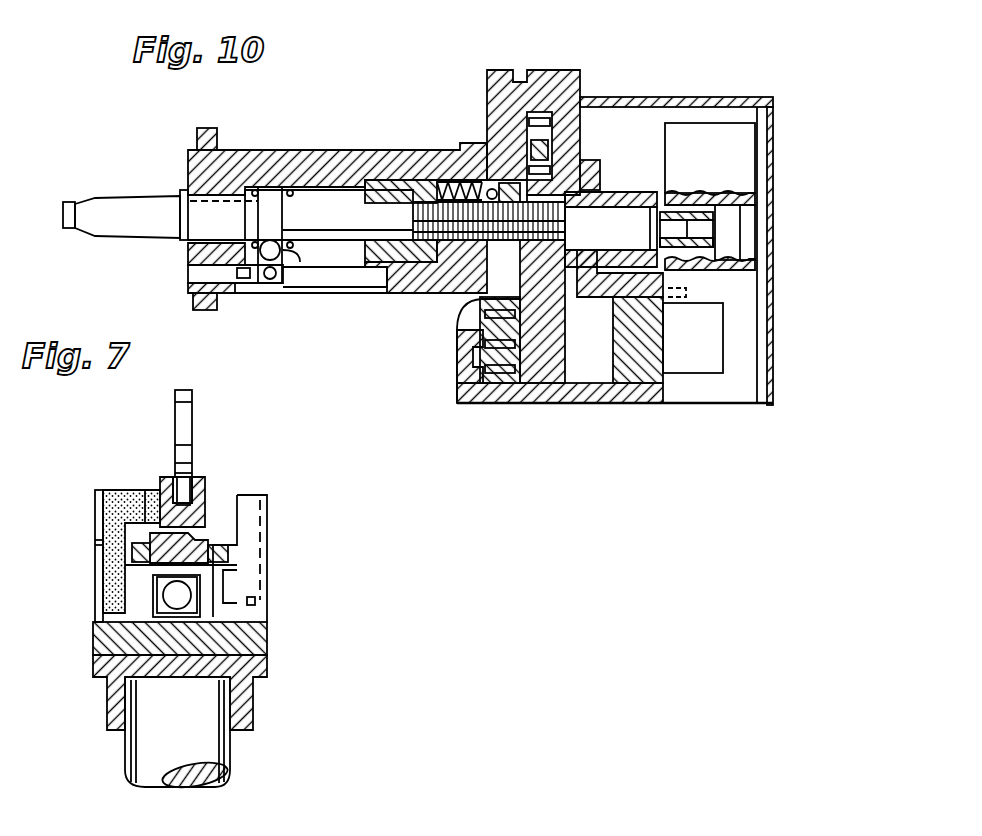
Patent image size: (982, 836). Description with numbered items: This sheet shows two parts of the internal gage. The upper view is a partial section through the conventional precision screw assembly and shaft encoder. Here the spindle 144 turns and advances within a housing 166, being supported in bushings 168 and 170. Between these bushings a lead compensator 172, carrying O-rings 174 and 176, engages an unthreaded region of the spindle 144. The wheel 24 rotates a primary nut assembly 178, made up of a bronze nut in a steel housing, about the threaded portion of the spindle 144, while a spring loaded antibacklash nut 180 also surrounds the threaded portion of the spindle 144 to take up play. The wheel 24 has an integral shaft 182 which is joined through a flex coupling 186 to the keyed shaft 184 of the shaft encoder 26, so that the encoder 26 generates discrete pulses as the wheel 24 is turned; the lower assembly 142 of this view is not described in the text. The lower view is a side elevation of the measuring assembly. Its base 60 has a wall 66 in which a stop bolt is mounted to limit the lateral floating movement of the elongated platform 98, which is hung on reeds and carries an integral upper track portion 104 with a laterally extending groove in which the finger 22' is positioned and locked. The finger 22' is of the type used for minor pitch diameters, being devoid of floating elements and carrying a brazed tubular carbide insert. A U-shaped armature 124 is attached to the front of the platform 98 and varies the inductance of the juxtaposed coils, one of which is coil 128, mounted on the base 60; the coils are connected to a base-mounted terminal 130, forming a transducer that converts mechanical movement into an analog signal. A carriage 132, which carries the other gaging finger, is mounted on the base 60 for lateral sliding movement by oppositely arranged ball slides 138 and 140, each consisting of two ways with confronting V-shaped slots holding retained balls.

In FIG. 10, the wheel 24 is at (557, 76).
In FIG. 10, the shaft encoder 26 is at (712, 137).
In FIG. 10, the housing 166 is at (308, 158).
In FIG. 10, the bushing 168 is at (205, 208).
In FIG. 10, the bushing 170 is at (390, 182).
In FIG. 10, the O-ring 176 is at (254, 190).
In FIG. 10, the spindle 144 is at (333, 218).
In FIG. 10, the spring loaded antibacklash nut 180 is at (520, 196).
In FIG. 10, the shaft 182 is at (624, 198).
In FIG. 10, the primary nut assembly 178 is at (540, 190).
In FIG. 10, the keyed shaft 184 is at (728, 226).
In FIG. 10, the flex coupling 186 is at (705, 240).
In FIG. 10, the lead compensator 172 is at (292, 262).
In FIG. 10, the O-ring 174 is at (292, 246).
In FIG. 10, the lower housing 142 is at (437, 350).
In FIG. 7, the finger 22' is at (215, 447).
In FIG. 7, the upper track portion 104 is at (209, 502).
In FIG. 7, the platform 98 is at (205, 512).
In FIG. 7, the armature 124 is at (118, 498).
In FIG. 7, the carriage 132 is at (200, 545).
In FIG. 7, the ball slide 140 is at (222, 556).
In FIG. 7, the wall 66 is at (92, 556).
In FIG. 7, the ball slide 138 is at (128, 562).
In FIG. 7, the coil 128 is at (175, 593).
In FIG. 7, the terminal 130 is at (237, 612).
In FIG. 7, the base 60 is at (243, 648).